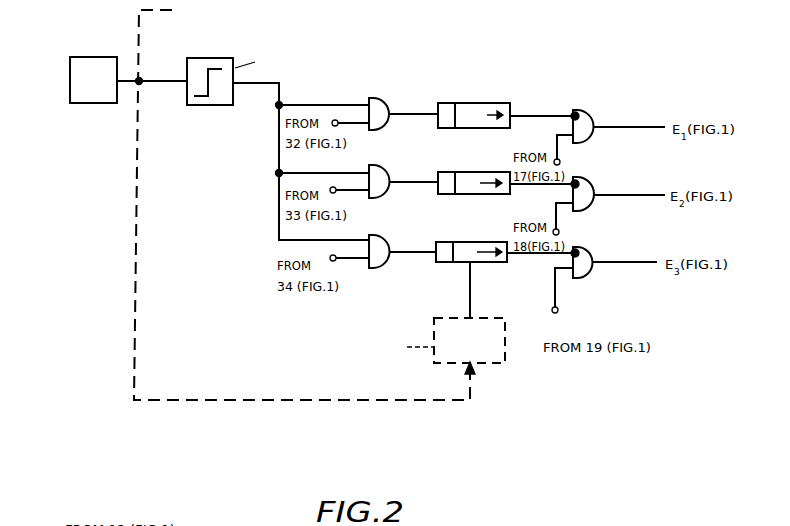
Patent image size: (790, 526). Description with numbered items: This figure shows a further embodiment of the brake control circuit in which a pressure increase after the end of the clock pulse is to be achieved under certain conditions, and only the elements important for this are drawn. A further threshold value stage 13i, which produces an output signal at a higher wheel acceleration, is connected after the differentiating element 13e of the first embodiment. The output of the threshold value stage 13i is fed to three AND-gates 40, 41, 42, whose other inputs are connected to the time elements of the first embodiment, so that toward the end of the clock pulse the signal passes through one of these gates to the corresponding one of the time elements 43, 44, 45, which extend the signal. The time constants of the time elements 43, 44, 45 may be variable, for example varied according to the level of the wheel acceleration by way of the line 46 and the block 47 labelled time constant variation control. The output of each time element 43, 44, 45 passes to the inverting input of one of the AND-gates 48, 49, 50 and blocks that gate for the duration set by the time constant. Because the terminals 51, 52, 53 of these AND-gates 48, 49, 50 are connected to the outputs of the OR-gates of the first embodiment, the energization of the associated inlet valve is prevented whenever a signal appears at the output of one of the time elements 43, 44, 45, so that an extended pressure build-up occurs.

The differentiating element 13e is at (102, 97).
The threshold value stage 13i is at (228, 65).
The AND-gate 40 is at (378, 98).
The AND-gate 41 is at (378, 166).
The AND-gate 42 is at (378, 236).
The time element 43 is at (470, 114).
The time element 44 is at (466, 182).
The time element 45 is at (466, 250).
The line 46 is at (220, 400).
The block 47 is at (492, 352).
The AND-gate 48 is at (587, 113).
The AND-gate 49 is at (600, 193).
The AND-gate 50 is at (598, 260).
The terminal 51 is at (561, 161).
The terminal 52 is at (560, 232).
The terminal 53 is at (558, 312).